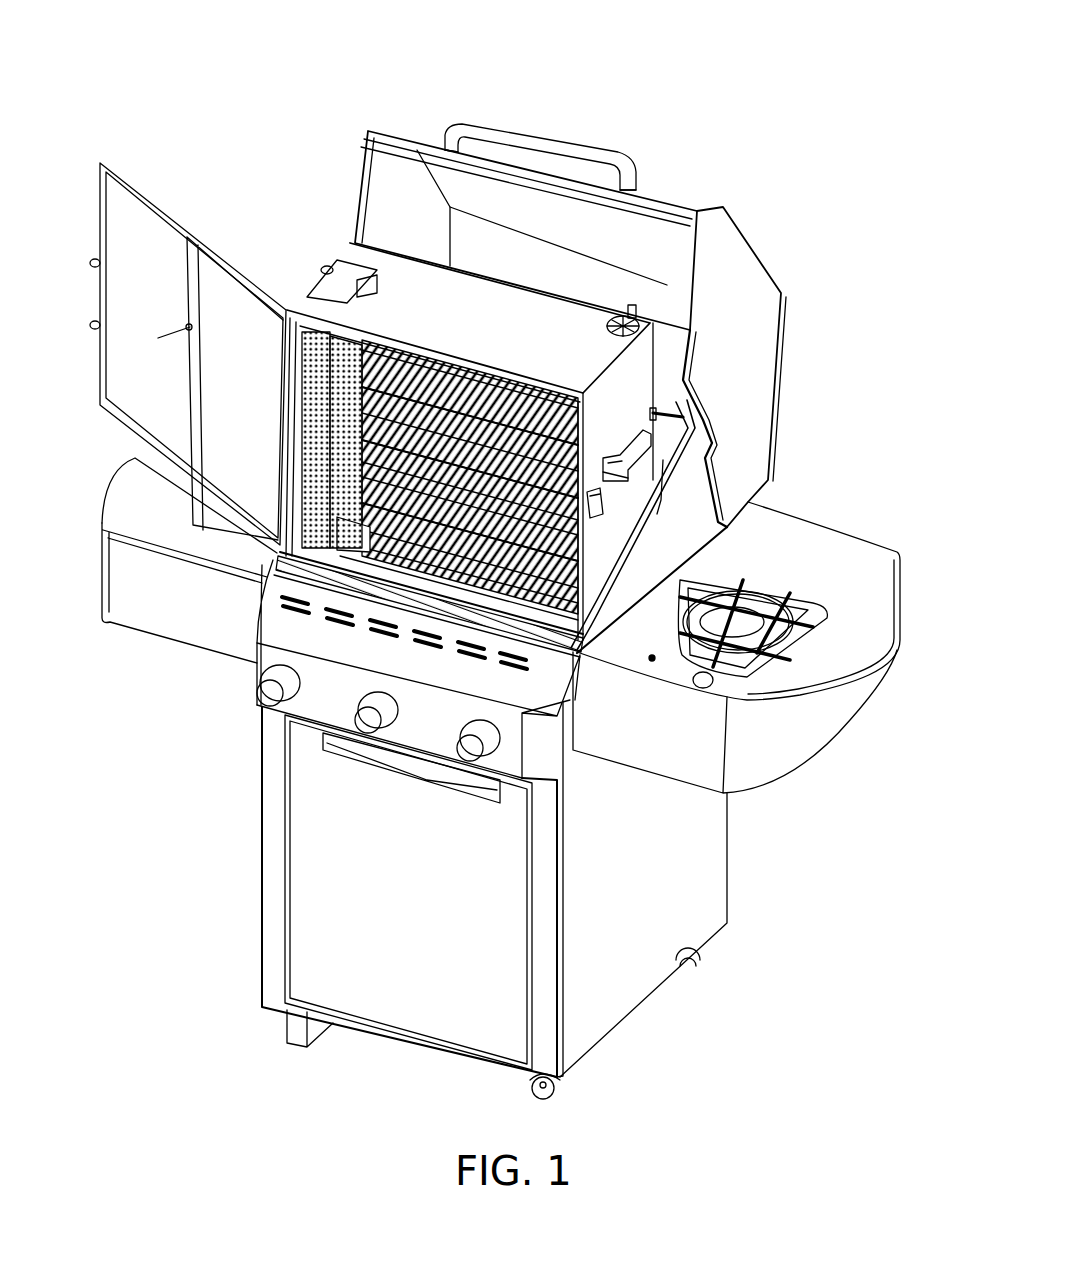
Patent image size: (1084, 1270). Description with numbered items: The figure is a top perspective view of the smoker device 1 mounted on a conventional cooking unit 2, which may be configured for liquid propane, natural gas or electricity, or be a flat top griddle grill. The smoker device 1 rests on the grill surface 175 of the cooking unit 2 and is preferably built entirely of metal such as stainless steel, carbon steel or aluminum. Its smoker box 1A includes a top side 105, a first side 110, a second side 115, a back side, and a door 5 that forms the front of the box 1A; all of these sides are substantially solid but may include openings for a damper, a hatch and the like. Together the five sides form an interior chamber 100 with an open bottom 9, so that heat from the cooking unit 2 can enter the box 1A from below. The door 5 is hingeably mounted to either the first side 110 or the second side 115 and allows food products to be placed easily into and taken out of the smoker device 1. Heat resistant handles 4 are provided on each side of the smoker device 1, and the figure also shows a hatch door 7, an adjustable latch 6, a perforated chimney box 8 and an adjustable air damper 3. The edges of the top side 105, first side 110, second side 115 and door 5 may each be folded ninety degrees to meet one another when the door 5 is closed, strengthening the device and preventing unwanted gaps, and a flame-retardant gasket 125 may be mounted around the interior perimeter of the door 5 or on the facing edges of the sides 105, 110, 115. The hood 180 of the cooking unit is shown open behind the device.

The smoker device 1 is at (460, 320).
The smoker box 1A is at (562, 320).
The conventional cooking unit 2 is at (682, 192).
The adjustable air damper 3 is at (583, 400).
The heat resistant handles 4 is at (655, 475).
The door 5 is at (177, 217).
The adjustable latch 6 is at (603, 500).
The hatch door 7 is at (333, 270).
The perforated chimney box 8 is at (302, 350).
The open bottom 9 is at (372, 605).
The interior chamber 100 is at (767, 663).
The top side 105 is at (413, 297).
The first side 110 is at (650, 437).
The second side 115 is at (300, 347).
The flame-retardant gasket 125 is at (633, 410).
The grill surface 175 is at (577, 548).
The hood 180 is at (423, 137).